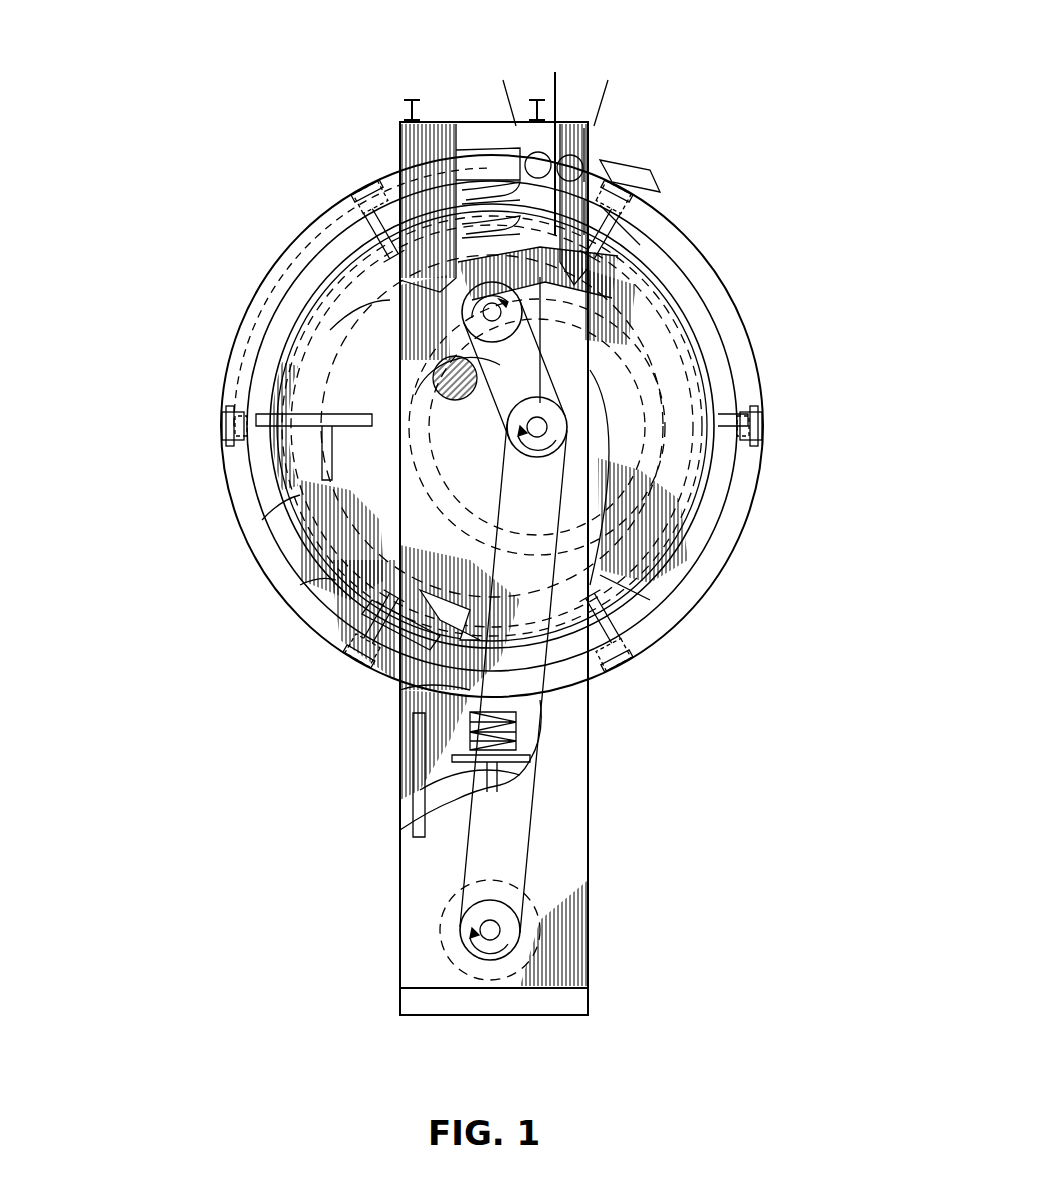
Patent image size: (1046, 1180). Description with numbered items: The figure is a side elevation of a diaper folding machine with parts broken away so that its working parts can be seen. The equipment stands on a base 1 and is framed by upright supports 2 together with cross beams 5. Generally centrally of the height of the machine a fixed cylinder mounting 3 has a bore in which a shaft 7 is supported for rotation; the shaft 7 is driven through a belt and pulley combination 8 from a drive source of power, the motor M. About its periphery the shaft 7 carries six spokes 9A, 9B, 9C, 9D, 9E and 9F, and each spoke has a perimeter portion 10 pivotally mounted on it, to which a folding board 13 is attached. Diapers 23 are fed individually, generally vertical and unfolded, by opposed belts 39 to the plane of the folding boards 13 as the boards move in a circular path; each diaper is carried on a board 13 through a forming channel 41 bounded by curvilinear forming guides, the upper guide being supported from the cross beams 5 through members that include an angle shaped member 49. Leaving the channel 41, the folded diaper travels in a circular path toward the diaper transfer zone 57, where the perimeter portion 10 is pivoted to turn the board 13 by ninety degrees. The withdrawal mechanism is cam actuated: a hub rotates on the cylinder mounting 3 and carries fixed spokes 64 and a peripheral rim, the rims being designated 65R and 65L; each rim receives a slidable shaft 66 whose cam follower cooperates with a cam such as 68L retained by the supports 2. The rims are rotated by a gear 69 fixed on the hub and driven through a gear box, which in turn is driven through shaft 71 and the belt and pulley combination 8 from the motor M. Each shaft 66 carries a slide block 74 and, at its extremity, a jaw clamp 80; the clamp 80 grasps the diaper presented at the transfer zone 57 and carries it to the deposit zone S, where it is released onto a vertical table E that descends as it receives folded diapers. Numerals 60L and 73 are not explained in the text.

The base 1 is at (555, 1000).
The upright supports 2 is at (400, 142).
The cylinder mounting 3 is at (442, 403).
The cross beam 5 is at (413, 98).
The shaft 7 is at (735, 360).
The belt and pulley combination 8 is at (575, 396).
The spoke 9A is at (637, 248).
The spoke 9B is at (545, 430).
The spoke 9C is at (640, 598).
The spoke 9D is at (458, 700).
The spoke 9E is at (360, 400).
The spoke 9F is at (417, 292).
The perimeter portion 10 is at (633, 267).
The folding board 13 is at (622, 222).
The diaper 23 is at (558, 95).
The belts 39 is at (600, 115).
The forming channel 41 is at (477, 212).
The angle shaped member 49 is at (480, 128).
The diaper transfer zone 57 is at (776, 453).
The clamp 60L is at (315, 600).
The spoke 64 is at (372, 606).
The rim 65L is at (272, 540).
The rim 65R is at (600, 160).
The shaft 66 is at (225, 375).
The cam 68L is at (748, 358).
The gear 69 is at (320, 370).
The shaft 71 is at (500, 313).
The lower pulley 73 is at (545, 900).
The slide block 74 is at (222, 420).
The jaw clamp 80 is at (330, 215).
The vertical table E is at (520, 778).
The motor M is at (440, 915).
The deposit zone S is at (540, 722).